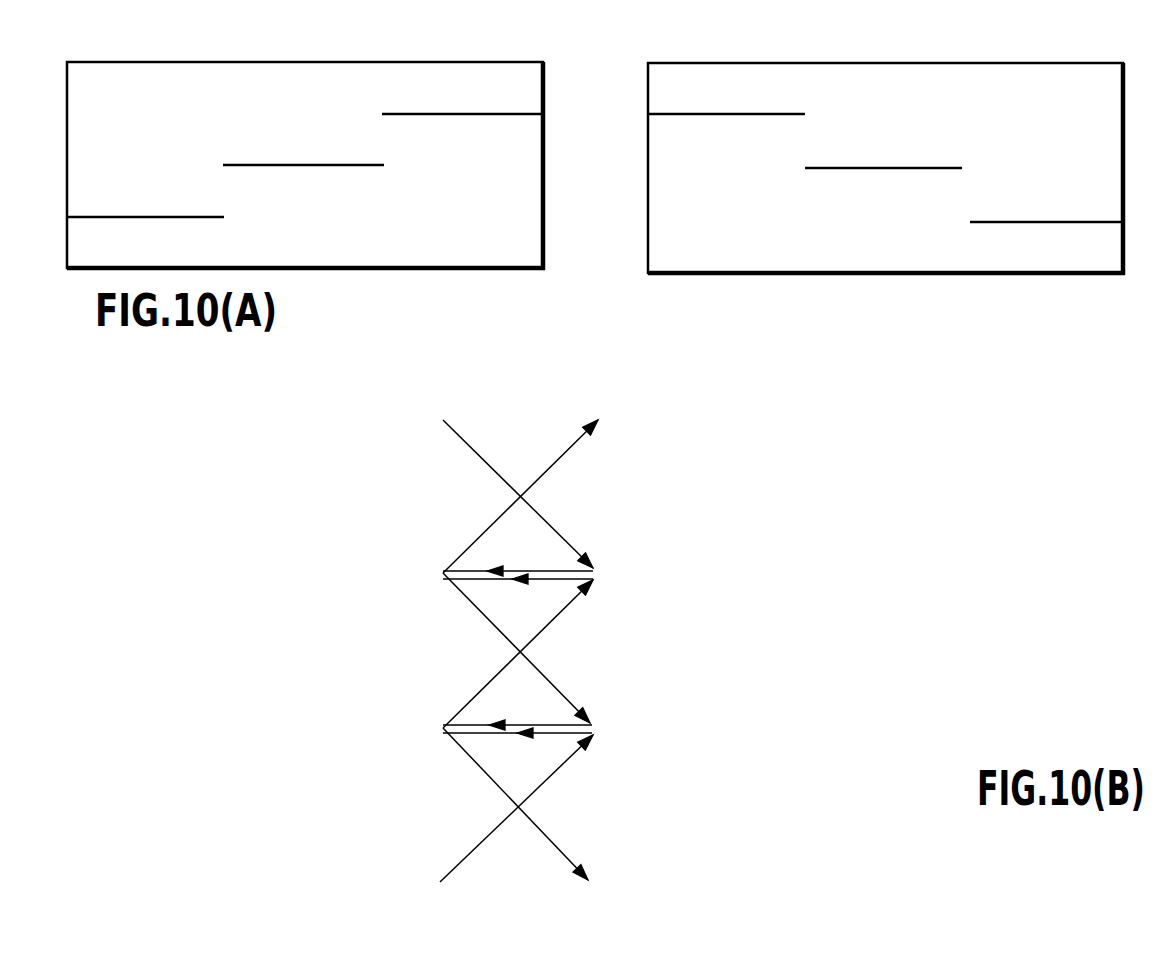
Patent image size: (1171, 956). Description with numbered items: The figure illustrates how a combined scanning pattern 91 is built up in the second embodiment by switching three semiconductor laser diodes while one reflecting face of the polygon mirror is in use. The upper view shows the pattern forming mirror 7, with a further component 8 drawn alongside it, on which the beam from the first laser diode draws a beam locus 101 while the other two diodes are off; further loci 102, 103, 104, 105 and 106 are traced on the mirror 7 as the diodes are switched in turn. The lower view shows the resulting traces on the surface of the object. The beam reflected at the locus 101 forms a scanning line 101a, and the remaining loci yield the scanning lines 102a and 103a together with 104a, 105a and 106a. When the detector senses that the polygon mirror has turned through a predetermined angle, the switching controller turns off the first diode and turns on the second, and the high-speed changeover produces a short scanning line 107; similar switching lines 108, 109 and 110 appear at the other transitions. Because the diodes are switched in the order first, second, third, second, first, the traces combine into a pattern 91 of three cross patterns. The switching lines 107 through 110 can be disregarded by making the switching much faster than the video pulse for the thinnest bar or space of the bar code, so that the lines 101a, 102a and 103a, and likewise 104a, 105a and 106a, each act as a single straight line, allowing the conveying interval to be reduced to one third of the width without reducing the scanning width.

In FIG. 10B, the pattern forming mirror 7 is at (658, 63).
In FIG. 10A, the pattern forming mirror 8 is at (526, 62).
In FIG. 10B, the combined scanning pattern 91 is at (396, 567).
In FIG. 10B, the beam locus 101 is at (1061, 222).
In FIG. 10B, the beam locus 102 is at (867, 167).
In FIG. 10B, the beam locus 103 is at (733, 113).
In FIG. 10A, the beam locus 104 is at (441, 113).
In FIG. 10A, the beam locus 105 is at (351, 164).
In FIG. 10A, the beam locus 106 is at (175, 216).
In FIG. 10B, the scanning line 101a is at (475, 848).
In FIG. 10B, the scanning line 102a is at (550, 627).
In FIG. 10B, the scanning line 103a is at (560, 458).
In FIG. 10B, the scanning line 104a is at (465, 438).
In FIG. 10B, the scanning line 105a is at (490, 627).
In FIG. 10B, the scanning line 106a is at (550, 840).
In FIG. 10B, the scanning line 107 is at (553, 736).
In FIG. 10B, the scanning line 108 is at (552, 587).
In FIG. 10B, the scanning line 109 is at (550, 558).
In FIG. 10B, the scanning line 110 is at (547, 722).